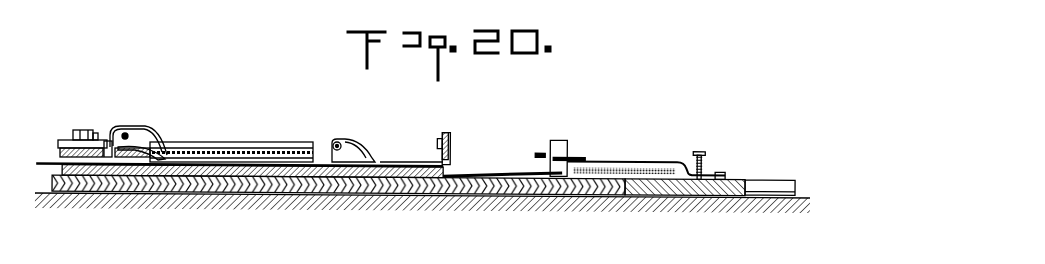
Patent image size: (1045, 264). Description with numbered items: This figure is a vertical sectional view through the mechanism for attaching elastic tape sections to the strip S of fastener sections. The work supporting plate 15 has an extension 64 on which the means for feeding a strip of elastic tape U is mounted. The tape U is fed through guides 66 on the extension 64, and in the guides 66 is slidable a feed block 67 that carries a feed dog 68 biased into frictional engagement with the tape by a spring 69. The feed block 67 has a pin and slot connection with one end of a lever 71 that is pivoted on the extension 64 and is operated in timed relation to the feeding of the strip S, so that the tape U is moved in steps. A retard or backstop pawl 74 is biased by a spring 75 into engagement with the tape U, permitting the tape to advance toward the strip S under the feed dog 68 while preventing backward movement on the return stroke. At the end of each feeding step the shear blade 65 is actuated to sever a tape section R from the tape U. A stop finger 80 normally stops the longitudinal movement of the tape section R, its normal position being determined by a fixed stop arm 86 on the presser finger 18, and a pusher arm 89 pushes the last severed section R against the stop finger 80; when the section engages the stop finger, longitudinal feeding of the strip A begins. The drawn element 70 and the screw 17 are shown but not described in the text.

The lever 71 is at (72, 141).
The post 70 is at (84, 130).
The feed block 67 is at (104, 141).
The spring 69 is at (129, 127).
The feed dog 68 is at (146, 140).
The guides 66 is at (257, 143).
The spring 75 is at (352, 140).
The retard or backstop pawl 74 is at (361, 147).
The elastic tape U is at (395, 158).
The shear blade 65 is at (447, 133).
The elastic tape section R is at (500, 168).
The pusher arm 89 is at (541, 150).
The stop arm 86 is at (565, 155).
The presser finger 18 is at (636, 160).
The screw 17 is at (672, 170).
The extension 64 is at (120, 178).
The strip A is at (207, 203).
The stop finger 80 is at (560, 166).
The strip of fastener sections S is at (622, 178).
The work supporting plate 15 is at (654, 185).